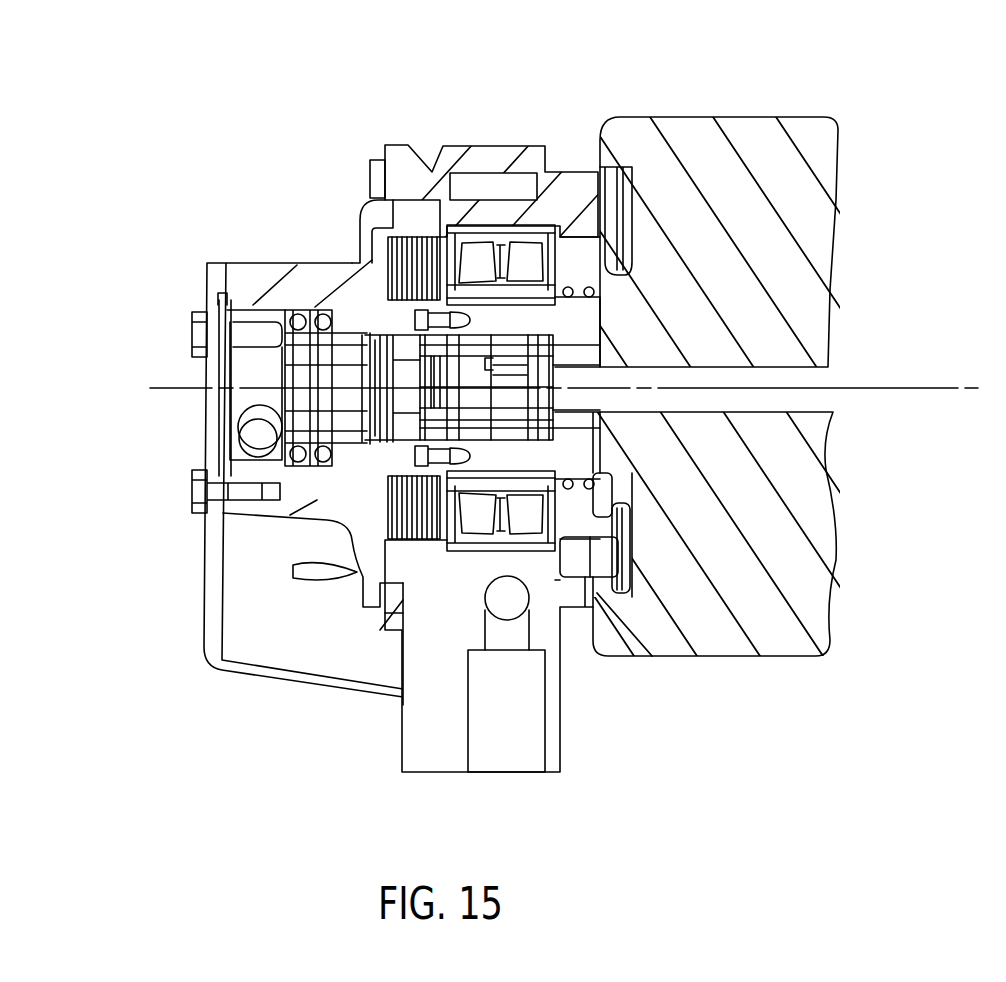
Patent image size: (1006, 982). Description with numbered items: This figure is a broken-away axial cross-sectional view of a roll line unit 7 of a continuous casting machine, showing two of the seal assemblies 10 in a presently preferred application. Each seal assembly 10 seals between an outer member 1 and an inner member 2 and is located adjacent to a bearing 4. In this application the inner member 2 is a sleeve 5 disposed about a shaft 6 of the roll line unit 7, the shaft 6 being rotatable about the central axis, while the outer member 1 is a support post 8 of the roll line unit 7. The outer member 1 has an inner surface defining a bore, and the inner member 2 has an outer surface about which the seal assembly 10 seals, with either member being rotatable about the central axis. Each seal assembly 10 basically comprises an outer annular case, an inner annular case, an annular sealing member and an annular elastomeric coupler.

The outer member 1 is at (486, 100).
The inner member 2 is at (464, 483).
The bearing 4 is at (452, 262).
The sleeve 5 is at (598, 252).
The shaft 6 is at (577, 325).
The roll line unit 7 is at (722, 58).
The support post 8 is at (432, 165).
The seal assembly 10 is at (590, 566).